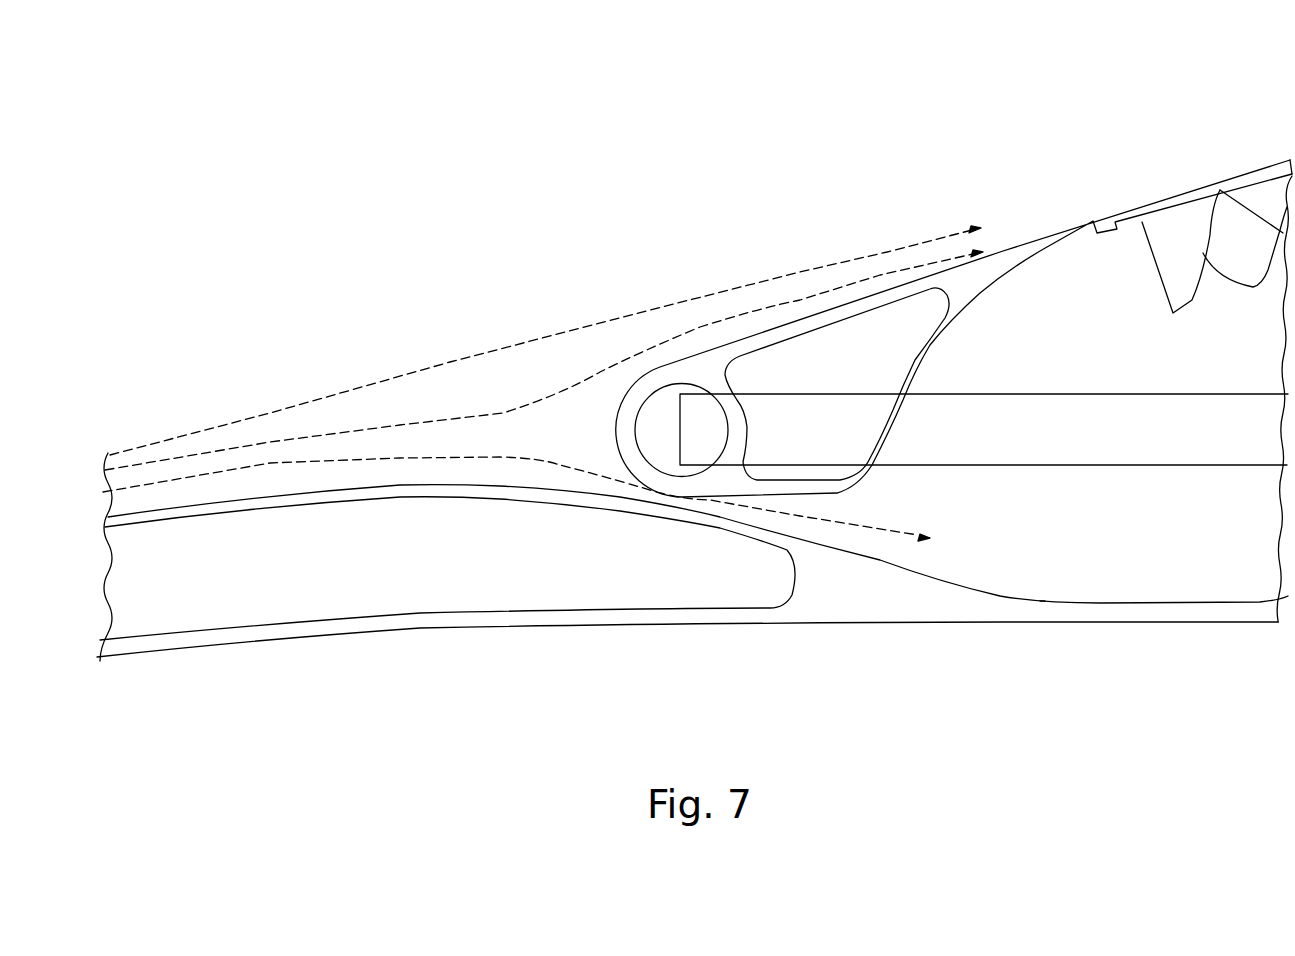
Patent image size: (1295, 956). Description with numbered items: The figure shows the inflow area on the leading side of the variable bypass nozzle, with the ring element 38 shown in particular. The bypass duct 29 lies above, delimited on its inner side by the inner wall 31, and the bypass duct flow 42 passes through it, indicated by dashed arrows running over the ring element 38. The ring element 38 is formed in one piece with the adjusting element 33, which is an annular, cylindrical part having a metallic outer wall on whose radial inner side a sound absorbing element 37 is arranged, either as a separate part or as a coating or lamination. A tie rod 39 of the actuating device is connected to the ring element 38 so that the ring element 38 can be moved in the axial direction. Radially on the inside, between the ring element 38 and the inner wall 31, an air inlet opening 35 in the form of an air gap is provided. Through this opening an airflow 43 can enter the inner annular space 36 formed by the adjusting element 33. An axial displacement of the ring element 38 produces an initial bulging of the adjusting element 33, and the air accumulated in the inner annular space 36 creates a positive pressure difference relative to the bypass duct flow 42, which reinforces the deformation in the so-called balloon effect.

The bypass duct 29 is at (523, 211).
The inner wall 31 is at (488, 492).
The adjusting element 33 is at (1165, 203).
The air inlet opening 35 is at (575, 481).
The inner annular space 36 is at (1118, 546).
The sound absorbing element 37 is at (1255, 277).
The ring element 38 is at (757, 340).
The tie rod 39 is at (1067, 413).
The bypass duct flow 42 is at (293, 437).
The airflow 43 is at (853, 527).